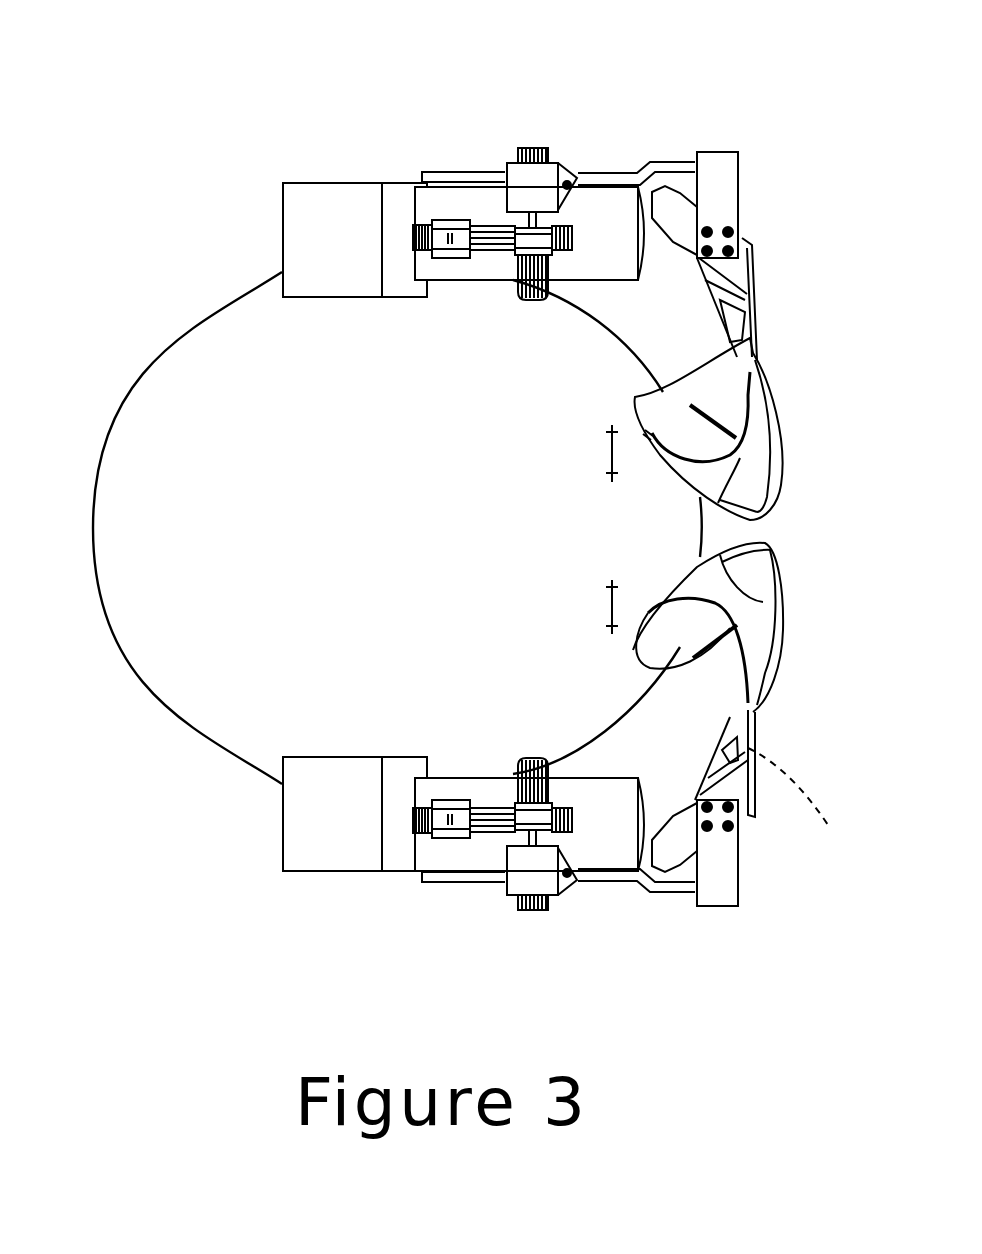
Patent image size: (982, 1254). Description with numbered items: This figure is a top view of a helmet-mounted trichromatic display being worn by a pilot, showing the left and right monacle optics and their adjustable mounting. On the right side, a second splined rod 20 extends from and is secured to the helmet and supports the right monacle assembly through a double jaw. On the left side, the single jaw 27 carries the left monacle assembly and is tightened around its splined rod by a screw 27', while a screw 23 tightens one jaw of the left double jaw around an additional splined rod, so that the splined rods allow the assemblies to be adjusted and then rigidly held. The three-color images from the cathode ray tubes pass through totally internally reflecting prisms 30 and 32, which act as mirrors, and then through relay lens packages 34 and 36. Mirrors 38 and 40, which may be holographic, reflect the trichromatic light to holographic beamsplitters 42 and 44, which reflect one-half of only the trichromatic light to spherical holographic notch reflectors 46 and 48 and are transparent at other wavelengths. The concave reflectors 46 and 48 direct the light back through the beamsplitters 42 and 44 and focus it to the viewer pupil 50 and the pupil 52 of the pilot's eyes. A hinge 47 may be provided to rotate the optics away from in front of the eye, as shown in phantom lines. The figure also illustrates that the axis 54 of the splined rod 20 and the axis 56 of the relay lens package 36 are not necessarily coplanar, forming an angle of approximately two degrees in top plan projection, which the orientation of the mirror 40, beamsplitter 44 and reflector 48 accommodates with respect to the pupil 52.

The second splined rod 20 is at (527, 922).
The screw 23 is at (532, 220).
The single jaw 27 is at (397, 161).
The screw 27' is at (426, 168).
The totally internally reflecting prism 30 is at (325, 210).
The totally internally reflecting prism 32 is at (358, 858).
The relay lens package 34 is at (600, 227).
The relay lens package 36 is at (449, 773).
The mirror 38 is at (675, 208).
The mirror 40 is at (672, 853).
The holographic beamsplitter 42 is at (682, 433).
The holographic beamsplitter 44 is at (680, 647).
The spherical holographic notch reflector 46 is at (772, 445).
The hinge 47 is at (803, 809).
The spherical holographic notch reflector 48 is at (767, 635).
The viewer pupil 50 is at (596, 455).
The pupil 52 is at (596, 602).
The axis of splined rod 54 is at (161, 900).
The axis of relay lens package 56 is at (69, 881).